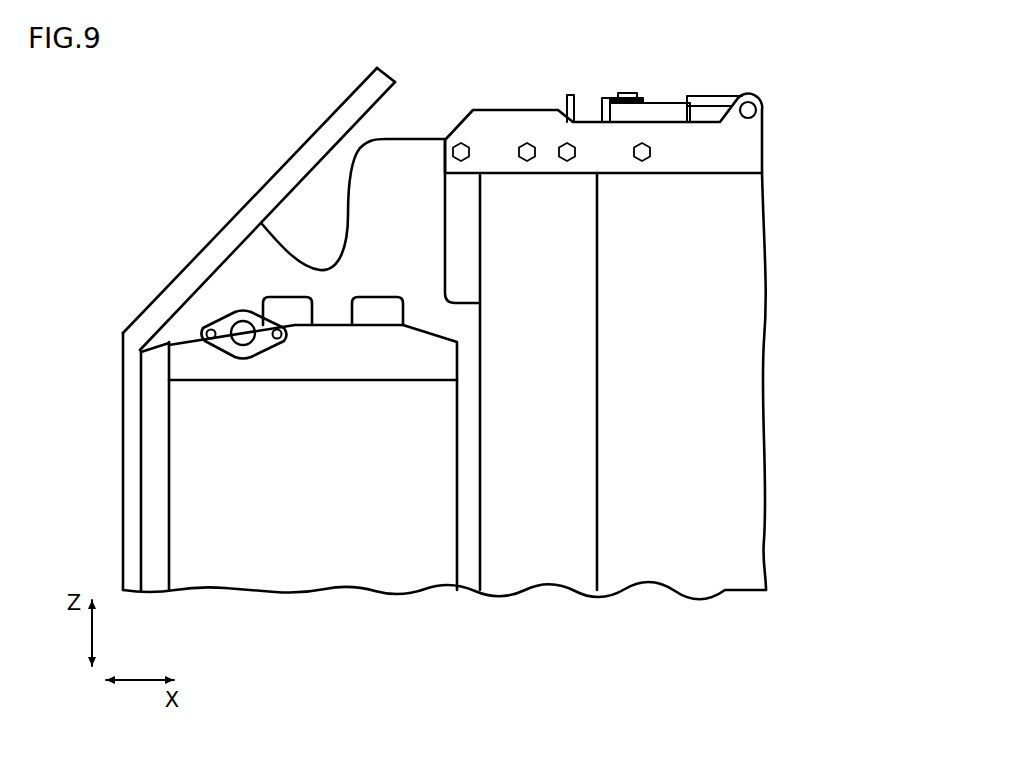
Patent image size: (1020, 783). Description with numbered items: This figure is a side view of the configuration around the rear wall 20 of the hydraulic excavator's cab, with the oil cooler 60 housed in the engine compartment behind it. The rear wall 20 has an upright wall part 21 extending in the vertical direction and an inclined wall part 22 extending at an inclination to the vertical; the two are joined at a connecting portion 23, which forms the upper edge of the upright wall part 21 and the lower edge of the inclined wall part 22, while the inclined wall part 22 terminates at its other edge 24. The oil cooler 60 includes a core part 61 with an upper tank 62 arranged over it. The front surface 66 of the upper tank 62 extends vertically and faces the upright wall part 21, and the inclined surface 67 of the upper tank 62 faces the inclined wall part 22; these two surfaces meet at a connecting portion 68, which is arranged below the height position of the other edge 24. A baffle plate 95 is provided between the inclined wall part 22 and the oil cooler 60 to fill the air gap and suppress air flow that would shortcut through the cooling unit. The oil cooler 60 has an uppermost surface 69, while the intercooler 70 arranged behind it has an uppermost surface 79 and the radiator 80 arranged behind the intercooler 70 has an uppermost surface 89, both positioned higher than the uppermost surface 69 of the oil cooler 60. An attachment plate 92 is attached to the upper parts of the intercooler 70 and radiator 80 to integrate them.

The rear wall 20 is at (406, 435).
The upright wall part 21 is at (130, 538).
The inclined wall part 22 is at (233, 233).
The connecting portion 23 is at (132, 345).
The other edge 24 is at (377, 78).
The oil cooler 60 is at (264, 442).
The core part 61 is at (387, 540).
The upper tank 62 is at (293, 350).
The front surface 66 is at (168, 363).
The inclined surface 67 is at (188, 337).
The connecting portion 68 is at (200, 335).
The uppermost surface 69 is at (333, 327).
The intercooler 70 is at (537, 540).
The uppermost surface 79 is at (514, 108).
The radiator 80 is at (680, 540).
The uppermost surface 89 is at (660, 105).
The attachment plate 92 is at (722, 147).
The baffle plate 95 is at (410, 165).